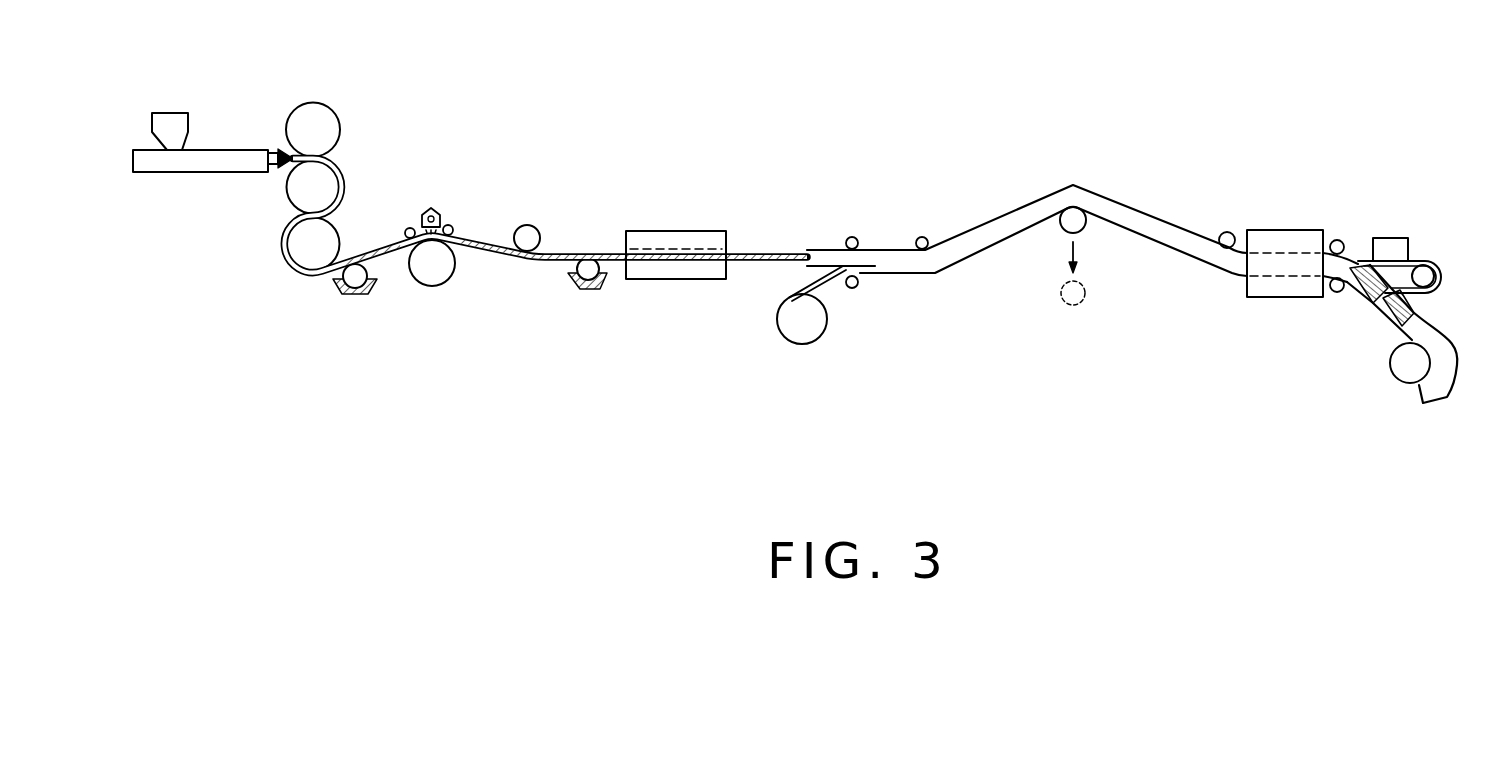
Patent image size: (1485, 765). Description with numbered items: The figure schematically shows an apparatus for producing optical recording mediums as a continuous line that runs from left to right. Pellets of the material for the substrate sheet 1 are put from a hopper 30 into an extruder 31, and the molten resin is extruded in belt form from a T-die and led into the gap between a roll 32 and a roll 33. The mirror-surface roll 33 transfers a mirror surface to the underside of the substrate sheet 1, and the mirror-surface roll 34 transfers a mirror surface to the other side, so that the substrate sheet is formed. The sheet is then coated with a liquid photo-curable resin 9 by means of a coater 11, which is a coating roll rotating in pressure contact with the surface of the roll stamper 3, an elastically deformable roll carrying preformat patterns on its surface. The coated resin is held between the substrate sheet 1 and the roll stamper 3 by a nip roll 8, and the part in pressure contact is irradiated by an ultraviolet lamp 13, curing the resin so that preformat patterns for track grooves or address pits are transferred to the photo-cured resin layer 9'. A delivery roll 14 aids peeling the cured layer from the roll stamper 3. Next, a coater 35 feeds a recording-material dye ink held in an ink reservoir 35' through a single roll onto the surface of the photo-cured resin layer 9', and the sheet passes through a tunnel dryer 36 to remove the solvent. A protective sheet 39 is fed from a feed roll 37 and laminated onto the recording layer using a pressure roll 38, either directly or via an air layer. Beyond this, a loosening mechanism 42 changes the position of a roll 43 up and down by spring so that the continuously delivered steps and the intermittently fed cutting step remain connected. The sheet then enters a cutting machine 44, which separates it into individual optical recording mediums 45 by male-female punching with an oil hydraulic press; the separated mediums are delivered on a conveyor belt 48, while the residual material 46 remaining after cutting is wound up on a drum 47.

The substrate sheet 1 is at (294, 263).
The roll stamper 3 is at (435, 287).
The nip roll 8 is at (410, 228).
The photo-curable resin 9 is at (355, 312).
The photo-cured resin layer 9' is at (576, 277).
The coating roll 11 is at (368, 273).
The ultraviolet lamp 13 is at (431, 207).
The delivery roll 14 is at (451, 226).
The hopper 30 is at (187, 127).
The extruder 31 is at (152, 170).
The roll 32 is at (322, 124).
The mirror-surface roll 33 is at (318, 187).
The mirror-surface roll 34 is at (320, 238).
The coater 35 is at (552, 269).
The ink reservoir 35' is at (587, 313).
The tunnel dryer 36 is at (680, 231).
The feed roll 37 is at (803, 344).
The pressure roll 38 is at (852, 236).
The protective sheet 39 is at (834, 287).
The loosening mechanism 42 is at (1213, 299).
The roller 43 is at (1060, 223).
The cutting machine 44 is at (1287, 230).
The optical recording mediums 45 is at (1391, 238).
The residual material 46 is at (1444, 398).
The drum 47 is at (1404, 369).
The conveyor belt 48 is at (1437, 292).